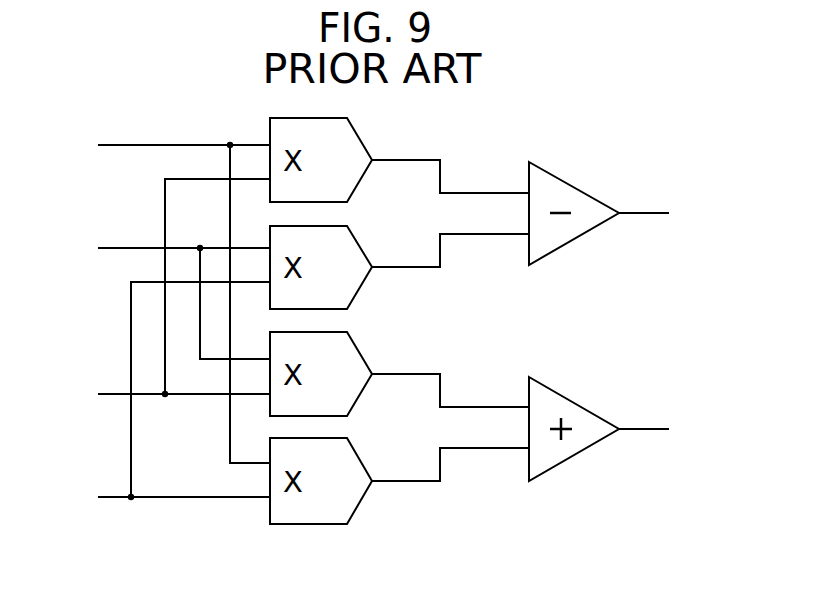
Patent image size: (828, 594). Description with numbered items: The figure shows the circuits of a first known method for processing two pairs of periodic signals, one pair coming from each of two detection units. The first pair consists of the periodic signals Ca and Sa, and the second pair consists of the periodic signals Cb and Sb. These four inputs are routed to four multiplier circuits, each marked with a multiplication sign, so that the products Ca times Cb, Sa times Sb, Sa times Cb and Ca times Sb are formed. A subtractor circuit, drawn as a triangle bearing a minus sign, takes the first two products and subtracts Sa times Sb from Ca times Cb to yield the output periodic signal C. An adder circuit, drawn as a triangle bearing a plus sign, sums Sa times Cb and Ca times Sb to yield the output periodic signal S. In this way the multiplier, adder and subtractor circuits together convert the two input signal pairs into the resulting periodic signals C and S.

The periodic signal Ca is at (165, 296).
The periodic signal Sa is at (165, 296).
The periodic signal Cb is at (165, 294).
The periodic signal Sb is at (165, 397).
The periodic signal C is at (655, 213).
The periodic signal S is at (656, 428).